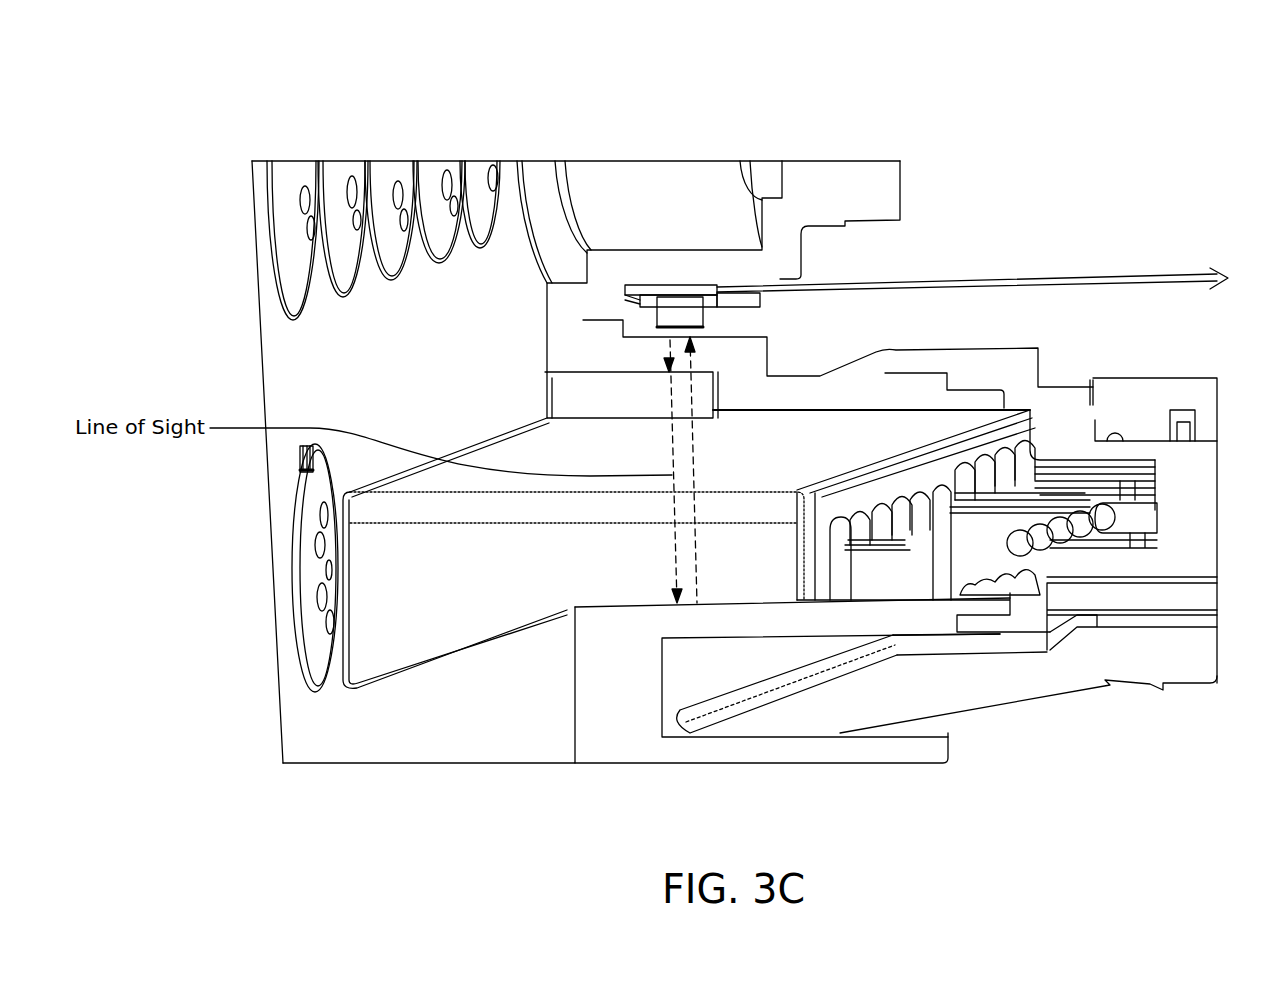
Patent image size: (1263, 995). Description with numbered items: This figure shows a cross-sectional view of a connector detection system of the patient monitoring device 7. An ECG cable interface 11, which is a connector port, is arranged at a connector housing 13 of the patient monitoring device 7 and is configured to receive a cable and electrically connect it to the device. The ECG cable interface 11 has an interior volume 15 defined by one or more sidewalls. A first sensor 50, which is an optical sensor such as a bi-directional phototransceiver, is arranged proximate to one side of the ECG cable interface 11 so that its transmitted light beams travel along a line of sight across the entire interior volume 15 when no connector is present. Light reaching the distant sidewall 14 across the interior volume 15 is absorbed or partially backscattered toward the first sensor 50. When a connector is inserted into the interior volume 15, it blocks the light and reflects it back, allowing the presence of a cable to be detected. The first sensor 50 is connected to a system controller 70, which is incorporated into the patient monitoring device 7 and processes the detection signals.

The patient monitoring device 7 is at (522, 161).
The first sensor 50 is at (678, 290).
The connector housing 13 is at (277, 351).
The ECG cable interface 11 is at (402, 637).
The interior volume 15 is at (777, 465).
The distant sidewall 14 is at (757, 607).
The system controller 70 is at (972, 271).